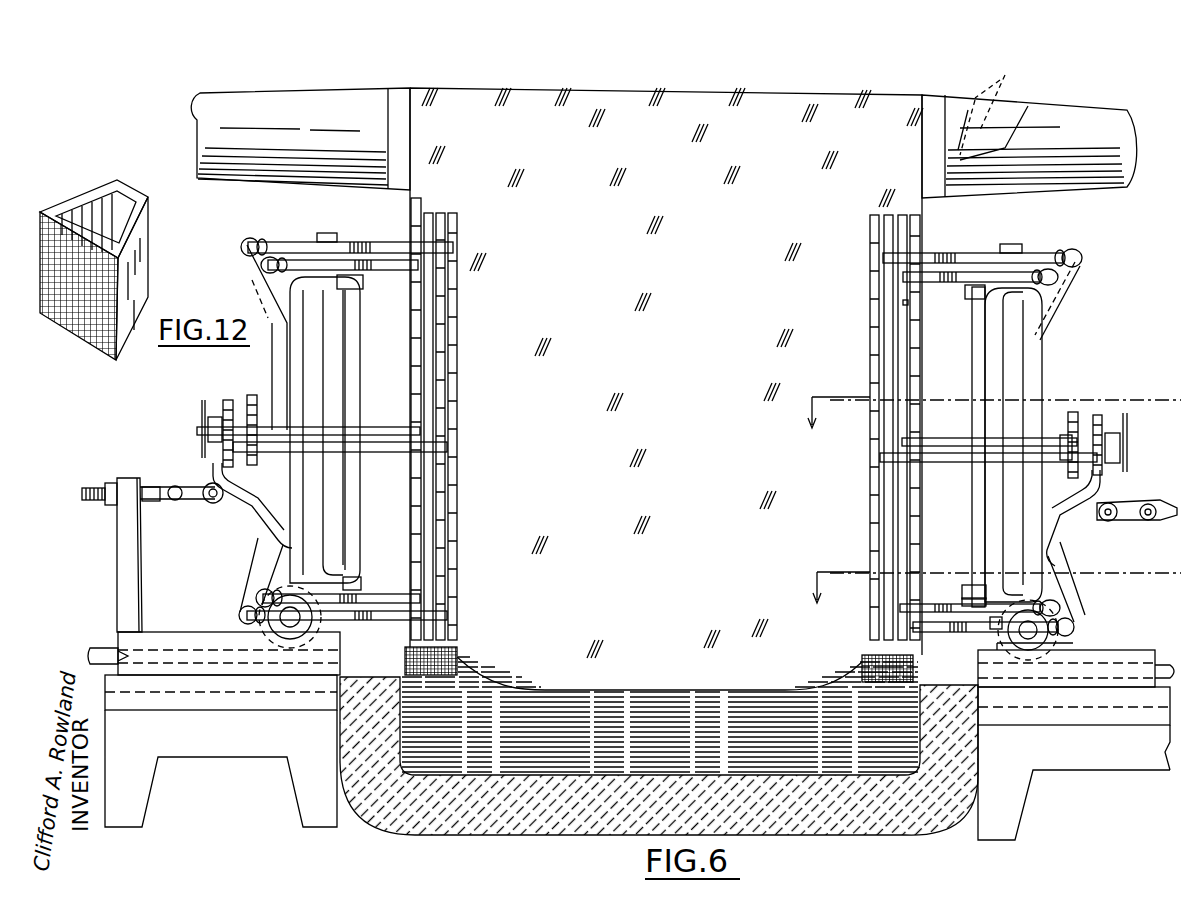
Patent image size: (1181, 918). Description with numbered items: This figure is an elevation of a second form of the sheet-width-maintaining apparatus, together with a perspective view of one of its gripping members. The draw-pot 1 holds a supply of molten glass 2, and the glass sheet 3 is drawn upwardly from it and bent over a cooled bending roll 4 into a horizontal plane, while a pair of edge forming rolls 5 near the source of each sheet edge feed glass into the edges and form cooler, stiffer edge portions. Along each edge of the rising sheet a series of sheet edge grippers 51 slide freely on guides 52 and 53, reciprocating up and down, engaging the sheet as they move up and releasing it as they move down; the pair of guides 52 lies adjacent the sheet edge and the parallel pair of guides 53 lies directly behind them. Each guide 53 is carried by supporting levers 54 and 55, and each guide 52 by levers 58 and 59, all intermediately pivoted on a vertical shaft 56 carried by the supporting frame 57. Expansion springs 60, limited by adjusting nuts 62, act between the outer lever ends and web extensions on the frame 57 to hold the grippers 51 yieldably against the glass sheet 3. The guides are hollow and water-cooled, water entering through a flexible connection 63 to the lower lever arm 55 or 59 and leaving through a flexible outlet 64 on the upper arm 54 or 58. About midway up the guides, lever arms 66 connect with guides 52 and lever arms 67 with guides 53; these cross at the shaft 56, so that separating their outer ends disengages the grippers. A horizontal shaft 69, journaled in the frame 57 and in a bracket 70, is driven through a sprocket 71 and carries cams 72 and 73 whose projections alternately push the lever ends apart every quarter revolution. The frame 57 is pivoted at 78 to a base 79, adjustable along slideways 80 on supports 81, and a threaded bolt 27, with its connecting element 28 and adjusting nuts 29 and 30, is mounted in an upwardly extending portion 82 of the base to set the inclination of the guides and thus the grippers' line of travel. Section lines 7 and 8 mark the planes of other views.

In FIG. 6, the draw-pot 1 is at (384, 830).
In FIG. 6, the molten glass 2 is at (505, 745).
In FIG. 6, the glass sheet 3 is at (666, 389).
In FIG. 6, the bending roll 4 is at (1025, 193).
In FIG. 6, the edge forming rolls 5 is at (457, 656).
In FIG. 6, the section line 7 is at (992, 424).
In FIG. 6, the section line 8 is at (995, 598).
In FIG. 6, the threaded bolt 27 is at (168, 487).
In FIG. 6, the pivot eye 28 is at (203, 487).
In FIG. 6, the adjusting nut 29 is at (150, 486).
In FIG. 6, the adjusting nut 30 is at (105, 484).
In FIG. 12, the sheet edge grippers 51 is at (117, 182).
In FIG. 6, the sheet edge grippers 51 is at (458, 318).
In FIG. 6, the guides 52 is at (398, 237).
In FIG. 6, the guides 53 is at (447, 228).
In FIG. 6, the supporting lever 54 is at (1020, 252).
In FIG. 6, the supporting lever 55 is at (992, 631).
In FIG. 6, the vertical shaft 56 is at (972, 345).
In FIG. 6, the supporting frame 57 is at (1018, 368).
In FIG. 6, the lever 58 is at (927, 282).
In FIG. 6, the lever 59 is at (935, 600).
In FIG. 6, the expansion springs 60 is at (1083, 268).
In FIG. 6, the adjusting nuts 62 is at (1060, 250).
In FIG. 6, the flexible connection 63 is at (356, 614).
In FIG. 6, the flexible outlet 64 is at (365, 240).
In FIG. 6, the lever arms 66 is at (920, 441).
In FIG. 6, the lever arms 67 is at (947, 462).
In FIG. 6, the horizontal shaft 69 is at (1068, 441).
In FIG. 6, the bracket 70 is at (1063, 528).
In FIG. 6, the sprocket 71 is at (1128, 415).
In FIG. 6, the cam 72 is at (1076, 412).
In FIG. 6, the cam 73 is at (1100, 416).
In FIG. 6, the pivot 78 is at (278, 630).
In FIG. 6, the base 79 is at (188, 644).
In FIG. 6, the slideways 80 is at (1162, 705).
In FIG. 6, the supports 81 is at (210, 745).
In FIG. 6, the upwardly extending portion 82 is at (128, 549).